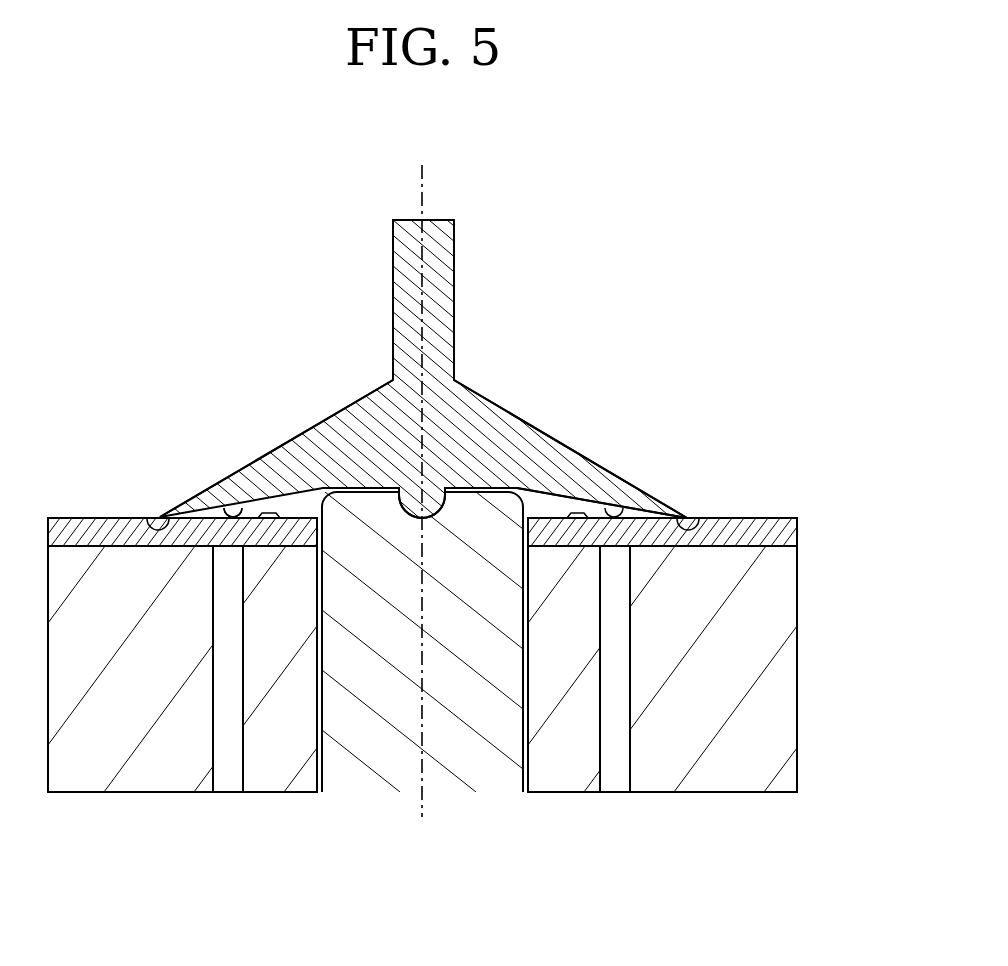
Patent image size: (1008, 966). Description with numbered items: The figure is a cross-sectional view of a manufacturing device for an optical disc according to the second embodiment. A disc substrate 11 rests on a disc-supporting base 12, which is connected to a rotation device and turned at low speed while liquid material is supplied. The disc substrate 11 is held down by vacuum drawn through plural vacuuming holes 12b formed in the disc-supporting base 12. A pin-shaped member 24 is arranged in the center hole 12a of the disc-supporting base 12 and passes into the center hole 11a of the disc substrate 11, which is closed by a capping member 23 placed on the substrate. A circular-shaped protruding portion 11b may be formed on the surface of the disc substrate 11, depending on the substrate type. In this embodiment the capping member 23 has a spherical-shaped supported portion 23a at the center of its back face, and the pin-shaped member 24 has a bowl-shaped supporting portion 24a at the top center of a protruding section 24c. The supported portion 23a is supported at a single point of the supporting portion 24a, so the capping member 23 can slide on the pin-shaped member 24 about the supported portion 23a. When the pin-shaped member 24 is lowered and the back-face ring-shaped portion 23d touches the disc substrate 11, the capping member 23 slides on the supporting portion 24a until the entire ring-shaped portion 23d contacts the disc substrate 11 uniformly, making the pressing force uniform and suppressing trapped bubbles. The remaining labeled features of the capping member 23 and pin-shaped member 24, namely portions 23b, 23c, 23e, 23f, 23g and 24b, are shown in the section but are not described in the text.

The disc substrate 11 is at (797, 520).
The center hole 11a is at (523, 515).
The circular-shaped protruding portion 11b is at (226, 510).
The disc-supporting base 12 is at (775, 657).
The center hole 12a is at (318, 758).
The vacuuming holes 12b is at (630, 770).
The capping member 23 is at (285, 279).
The spherical-shaped supported portion 23a is at (433, 490).
The left sloped surface 23b is at (380, 407).
The stem 23c is at (393, 292).
The back-face ring-shaped portion 23d is at (688, 520).
The lip 23e is at (614, 512).
The shoulder 23f is at (517, 488).
The right sloped surface 23g is at (530, 427).
The pin-shaped member 24 is at (384, 646).
The bowl-shaped supporting portion 24a is at (408, 500).
The seat post 24b is at (407, 775).
The protruding section 24c is at (260, 516).